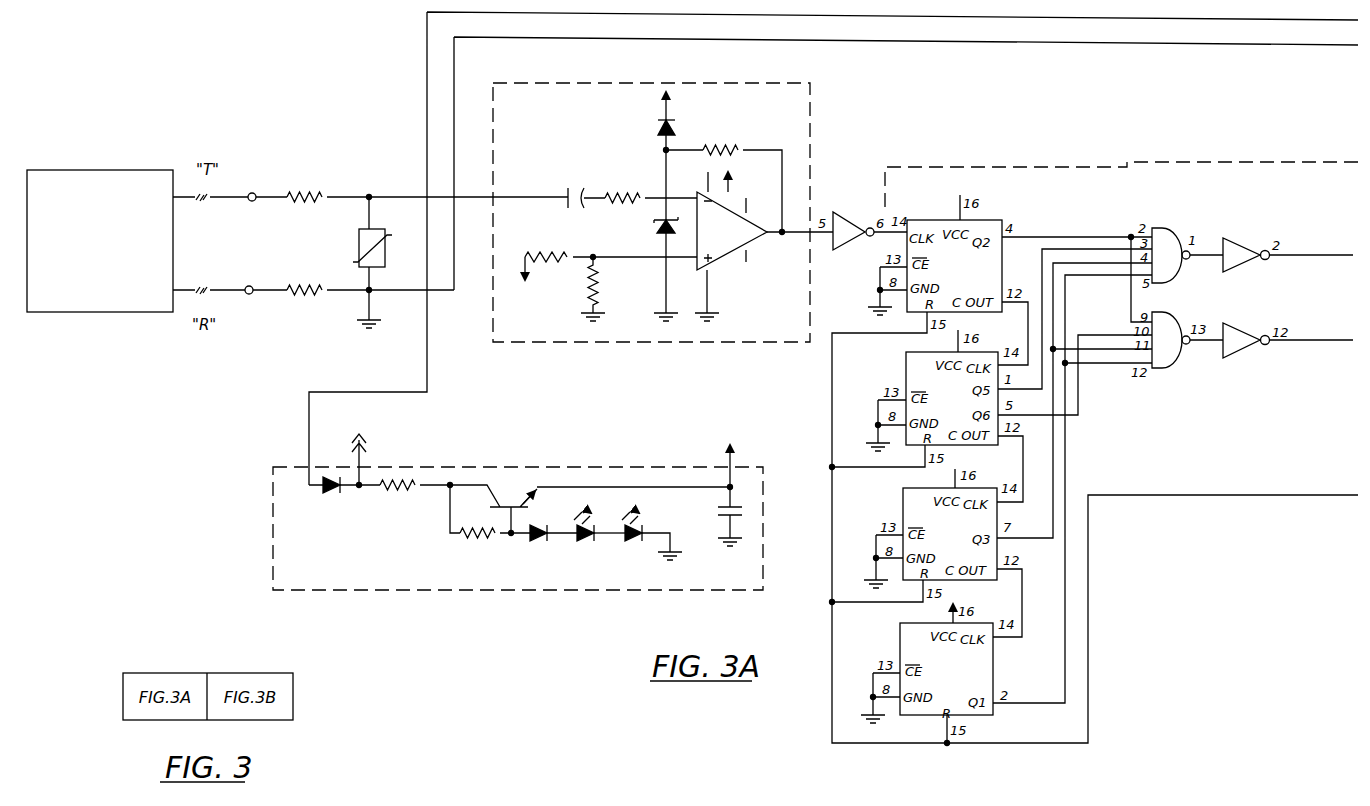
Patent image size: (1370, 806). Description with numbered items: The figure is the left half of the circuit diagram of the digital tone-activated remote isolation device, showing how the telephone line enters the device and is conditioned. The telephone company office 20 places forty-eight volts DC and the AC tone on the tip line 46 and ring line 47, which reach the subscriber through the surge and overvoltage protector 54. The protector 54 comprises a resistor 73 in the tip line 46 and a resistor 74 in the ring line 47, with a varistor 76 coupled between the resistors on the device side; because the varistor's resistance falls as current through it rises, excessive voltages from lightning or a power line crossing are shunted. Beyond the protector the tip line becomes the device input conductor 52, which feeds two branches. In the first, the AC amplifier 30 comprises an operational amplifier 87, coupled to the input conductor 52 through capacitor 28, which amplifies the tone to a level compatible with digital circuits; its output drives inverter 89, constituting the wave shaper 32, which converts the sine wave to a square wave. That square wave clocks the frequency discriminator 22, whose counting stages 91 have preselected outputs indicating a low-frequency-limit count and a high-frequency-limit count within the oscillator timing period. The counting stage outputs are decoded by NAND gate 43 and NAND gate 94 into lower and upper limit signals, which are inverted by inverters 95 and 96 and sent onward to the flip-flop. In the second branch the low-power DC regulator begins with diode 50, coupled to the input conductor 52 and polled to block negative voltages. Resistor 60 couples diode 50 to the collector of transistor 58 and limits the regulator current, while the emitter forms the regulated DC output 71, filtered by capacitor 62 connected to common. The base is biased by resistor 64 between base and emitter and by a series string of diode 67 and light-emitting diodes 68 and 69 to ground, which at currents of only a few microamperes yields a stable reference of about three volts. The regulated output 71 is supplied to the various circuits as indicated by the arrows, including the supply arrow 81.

The telephone company office 20 is at (128, 170).
The tip line 46 is at (217, 197).
The ring line 47 is at (222, 290).
The resistor 73 is at (305, 190).
The resistor 74 is at (304, 284).
The device input conductor 52 is at (396, 193).
The varistor 76 is at (385, 246).
The surge and overvoltage protector 54 is at (333, 318).
The capacitor 28 is at (583, 192).
The AC amplifier 30 is at (812, 97).
The wave shaper 32 is at (845, 200).
The operational amplifier 87 is at (724, 260).
The inverter 89 is at (851, 252).
The frequency discriminator 22 is at (1022, 162).
The NAND gate 43 is at (1170, 232).
The NAND gate 94 is at (1168, 368).
The inverter 95 is at (1240, 240).
The inverter 96 is at (1240, 358).
The counting stages 91 is at (1086, 453).
The supply arrow 81 is at (370, 452).
The diode 50 is at (330, 495).
The resistor 60 is at (396, 497).
The transistor 58 is at (511, 505).
The biasing resistor 64 is at (468, 540).
The diode 67 is at (532, 540).
The light-emitting diode 68 is at (590, 542).
The light-emitting diode 69 is at (640, 542).
The regulated DC output 71 is at (642, 484).
The filter capacitor 62 is at (738, 505).